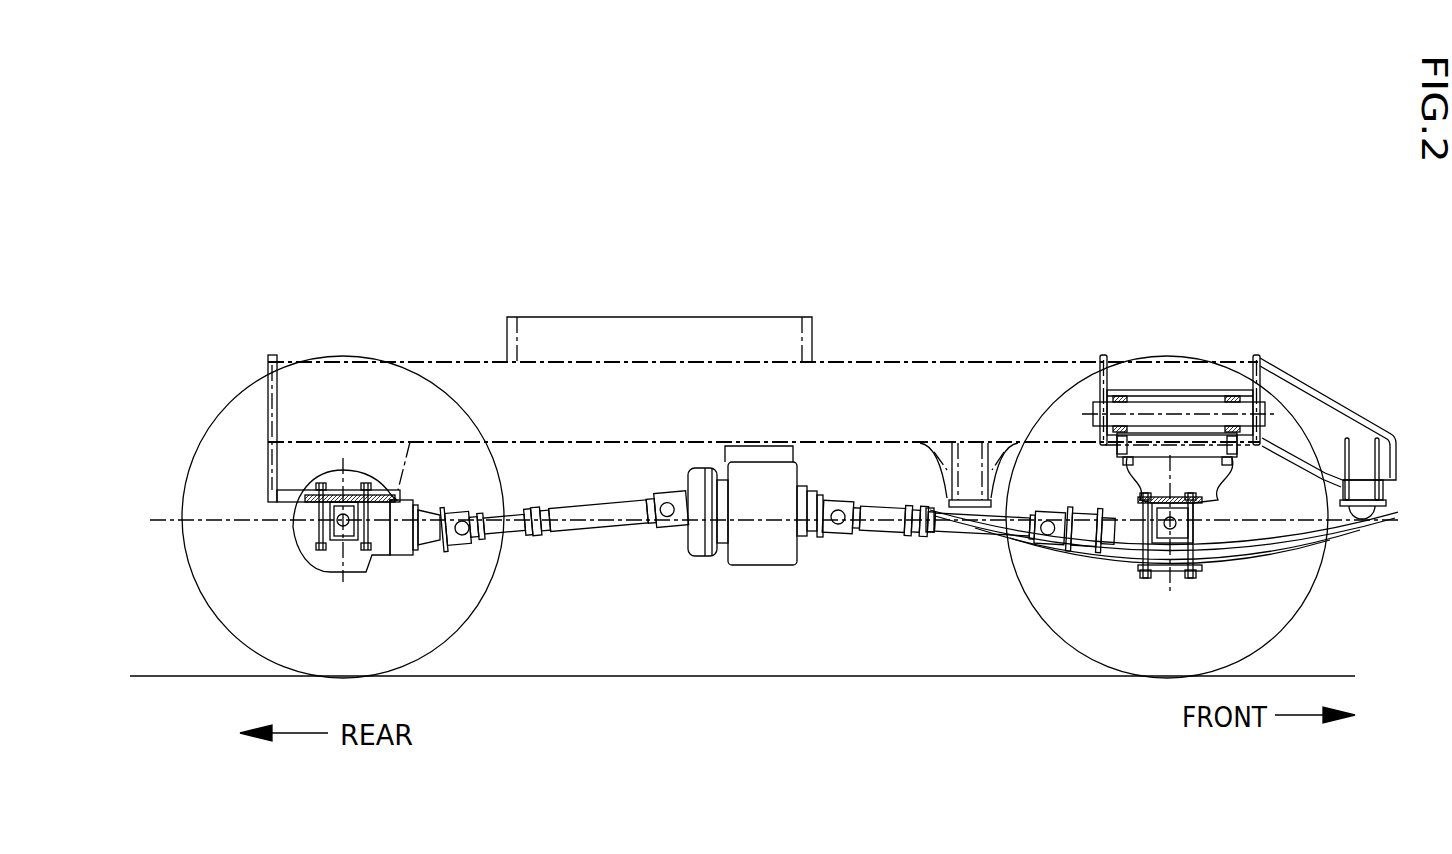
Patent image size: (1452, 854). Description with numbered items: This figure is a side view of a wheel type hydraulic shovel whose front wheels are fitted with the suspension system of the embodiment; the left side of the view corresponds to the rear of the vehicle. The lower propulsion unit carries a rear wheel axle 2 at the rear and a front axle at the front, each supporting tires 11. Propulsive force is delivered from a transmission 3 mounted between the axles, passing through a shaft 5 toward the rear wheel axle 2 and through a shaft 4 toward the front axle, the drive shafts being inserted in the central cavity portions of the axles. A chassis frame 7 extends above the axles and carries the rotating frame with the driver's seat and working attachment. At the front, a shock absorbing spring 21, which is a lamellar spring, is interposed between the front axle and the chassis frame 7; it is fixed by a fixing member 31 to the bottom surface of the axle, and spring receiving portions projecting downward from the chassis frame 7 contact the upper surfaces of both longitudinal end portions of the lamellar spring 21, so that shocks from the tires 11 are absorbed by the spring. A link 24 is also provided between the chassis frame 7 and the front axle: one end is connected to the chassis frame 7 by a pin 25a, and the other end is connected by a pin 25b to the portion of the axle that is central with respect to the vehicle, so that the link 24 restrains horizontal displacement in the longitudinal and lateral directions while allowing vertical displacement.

The rear wheel axle 2 is at (335, 553).
The transmission 3 is at (768, 533).
The shaft 4 is at (888, 518).
The shaft 5 is at (622, 508).
The chassis frame 7 is at (858, 373).
The tires 11 is at (252, 383).
The shock absorbing spring 21 is at (1112, 565).
The link 24 is at (1194, 382).
The pin 25a is at (1268, 412).
The pin 25b is at (1233, 448).
The fixing member 31 is at (1176, 575).